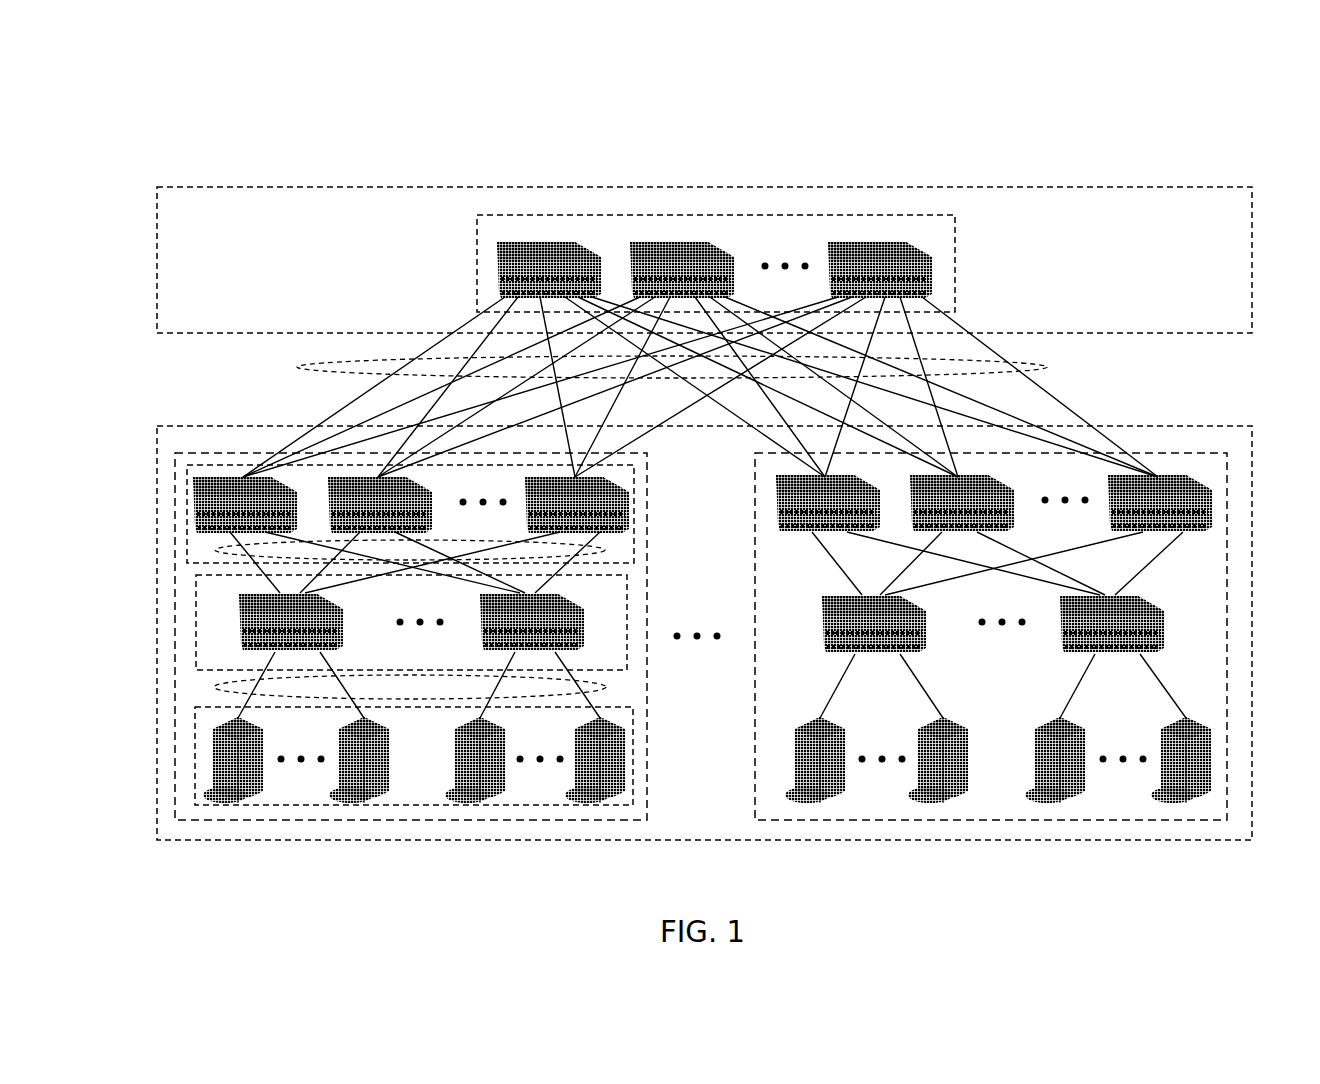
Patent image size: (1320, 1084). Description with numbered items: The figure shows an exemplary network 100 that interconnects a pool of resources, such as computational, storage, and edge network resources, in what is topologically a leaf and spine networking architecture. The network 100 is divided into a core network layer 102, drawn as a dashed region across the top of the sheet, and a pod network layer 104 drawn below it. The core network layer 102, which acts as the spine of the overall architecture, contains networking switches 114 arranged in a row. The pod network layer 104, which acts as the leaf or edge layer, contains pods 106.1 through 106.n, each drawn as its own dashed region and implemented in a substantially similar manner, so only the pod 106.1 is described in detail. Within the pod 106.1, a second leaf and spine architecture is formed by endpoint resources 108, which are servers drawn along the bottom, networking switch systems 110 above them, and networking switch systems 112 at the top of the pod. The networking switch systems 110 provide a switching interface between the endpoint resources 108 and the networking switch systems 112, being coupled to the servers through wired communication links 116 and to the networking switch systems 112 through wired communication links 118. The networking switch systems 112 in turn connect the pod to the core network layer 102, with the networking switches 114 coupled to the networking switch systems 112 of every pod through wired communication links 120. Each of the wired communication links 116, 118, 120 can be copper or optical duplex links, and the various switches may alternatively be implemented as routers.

The network 100 is at (1275, 142).
The core network layer 102 is at (1143, 187).
The pod network layer 104 is at (1162, 426).
The pod 106.1 is at (194, 453).
The pod 106.n is at (1201, 453).
The endpoint resources 108 is at (634, 718).
The networking switch systems 110 is at (627, 590).
The networking switch systems 112 is at (635, 512).
The networking switches 114 is at (955, 262).
The wired communication links 116 is at (606, 688).
The wired communication links 118 is at (605, 550).
The wired communication links 120 is at (1047, 368).